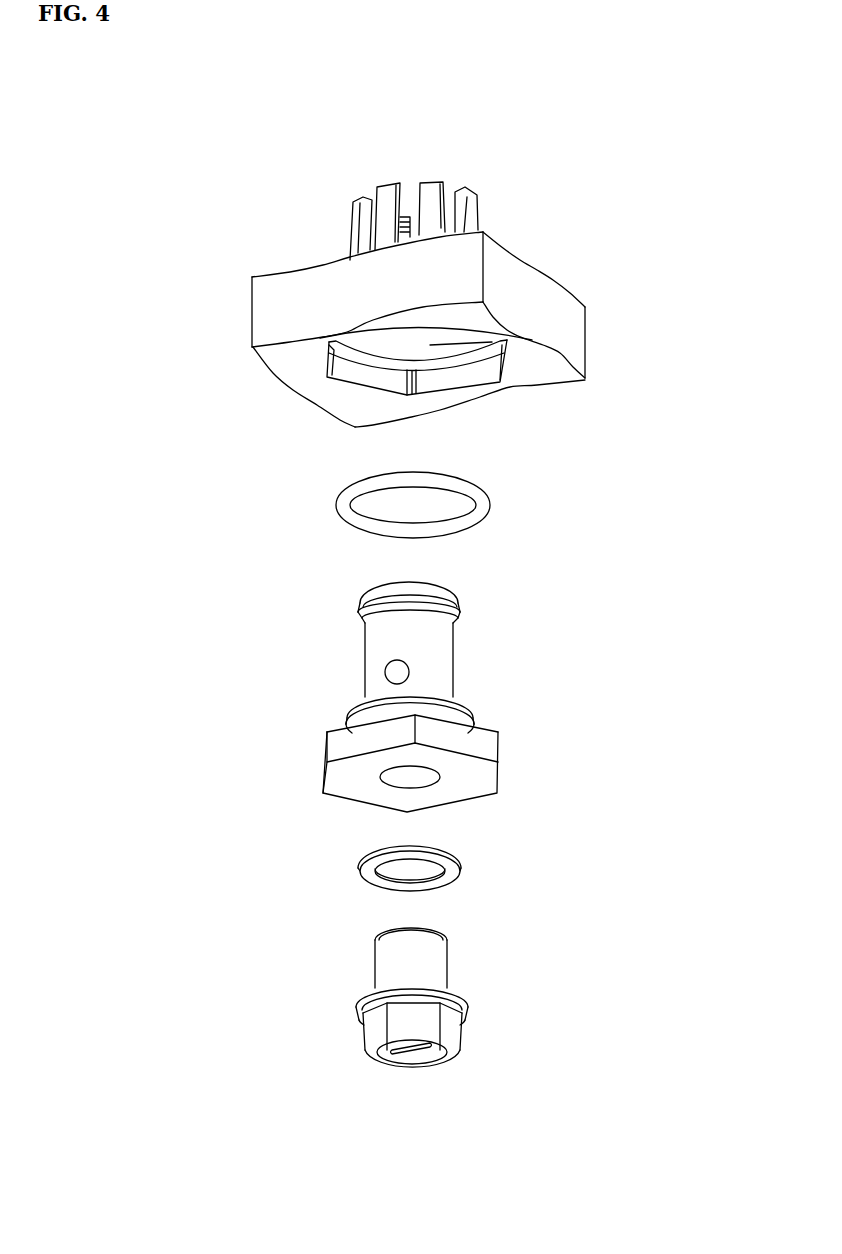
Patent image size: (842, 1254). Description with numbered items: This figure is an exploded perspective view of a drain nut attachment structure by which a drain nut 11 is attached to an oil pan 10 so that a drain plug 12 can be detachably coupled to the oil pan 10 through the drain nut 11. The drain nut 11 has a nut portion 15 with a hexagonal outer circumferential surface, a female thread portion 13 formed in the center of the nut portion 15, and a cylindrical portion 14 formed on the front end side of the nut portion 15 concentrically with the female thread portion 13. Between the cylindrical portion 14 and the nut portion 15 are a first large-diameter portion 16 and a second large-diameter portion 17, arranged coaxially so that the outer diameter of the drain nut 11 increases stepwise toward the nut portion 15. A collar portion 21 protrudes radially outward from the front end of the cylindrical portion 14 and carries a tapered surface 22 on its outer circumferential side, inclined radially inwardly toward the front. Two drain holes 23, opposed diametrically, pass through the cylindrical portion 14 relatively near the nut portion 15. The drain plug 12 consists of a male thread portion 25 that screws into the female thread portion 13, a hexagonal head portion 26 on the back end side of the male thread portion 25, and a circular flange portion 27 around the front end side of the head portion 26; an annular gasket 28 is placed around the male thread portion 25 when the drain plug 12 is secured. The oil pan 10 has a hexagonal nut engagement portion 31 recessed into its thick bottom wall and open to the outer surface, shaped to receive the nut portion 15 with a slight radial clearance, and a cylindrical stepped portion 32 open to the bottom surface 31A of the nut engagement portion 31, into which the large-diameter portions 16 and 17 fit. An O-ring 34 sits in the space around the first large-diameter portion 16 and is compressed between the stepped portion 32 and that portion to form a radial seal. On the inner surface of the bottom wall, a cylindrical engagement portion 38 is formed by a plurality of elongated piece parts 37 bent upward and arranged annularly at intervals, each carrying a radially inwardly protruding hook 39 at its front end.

The oil pan 10 is at (580, 286).
The drain nut 11 is at (405, 696).
The drain plug 12 is at (399, 1018).
The female thread portion 13 is at (390, 780).
The cylindrical portion 14 is at (442, 667).
The nut portion 15 is at (473, 777).
The first large-diameter portion 16 is at (457, 710).
The second large-diameter portion 17 is at (477, 723).
The collar portion 21 is at (463, 607).
The tapered surface 22 is at (452, 593).
The drain hole 23 is at (390, 673).
The male thread portion 25 is at (433, 967).
The head portion 26 is at (453, 1033).
The flange portion 27 is at (467, 1000).
The gasket 28 is at (453, 873).
The nut engagement portion 31 is at (360, 380).
The bottom surface of nut engagement portion 31A is at (327, 370).
The stepped portion 32 is at (450, 355).
The O-ring 34 is at (477, 495).
The piece parts 37 is at (387, 197).
The cylindrical engagement portion 38 is at (503, 105).
The hook 39 is at (373, 197).